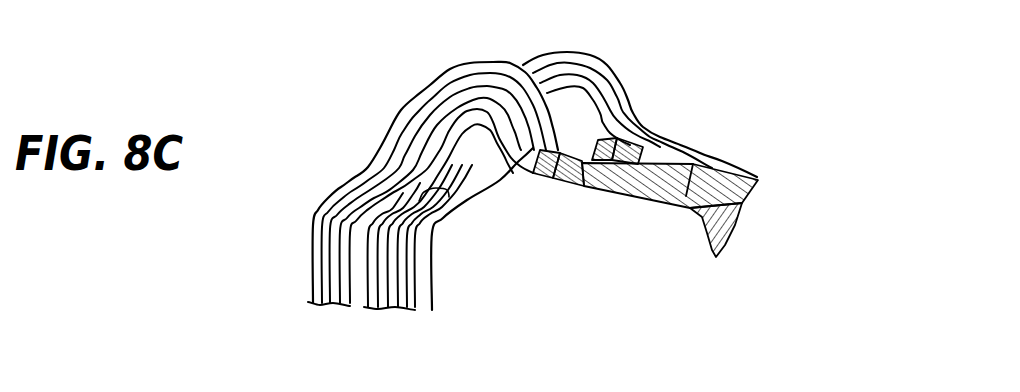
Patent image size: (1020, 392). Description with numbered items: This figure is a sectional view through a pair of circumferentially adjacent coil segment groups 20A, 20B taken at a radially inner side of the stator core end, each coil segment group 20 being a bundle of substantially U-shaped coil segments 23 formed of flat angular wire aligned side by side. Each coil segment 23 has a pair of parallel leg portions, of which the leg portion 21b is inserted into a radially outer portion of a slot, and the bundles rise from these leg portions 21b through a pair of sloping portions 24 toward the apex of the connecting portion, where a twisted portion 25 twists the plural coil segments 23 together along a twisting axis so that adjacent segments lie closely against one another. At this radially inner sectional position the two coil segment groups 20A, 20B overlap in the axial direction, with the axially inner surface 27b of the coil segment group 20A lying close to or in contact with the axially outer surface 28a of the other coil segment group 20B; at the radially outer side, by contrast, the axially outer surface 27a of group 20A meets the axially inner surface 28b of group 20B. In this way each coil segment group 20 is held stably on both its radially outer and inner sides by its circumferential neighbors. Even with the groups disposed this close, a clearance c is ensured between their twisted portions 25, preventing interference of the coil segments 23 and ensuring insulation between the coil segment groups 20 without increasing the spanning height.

The coil segment group 20 is at (568, 52).
The coil segment group 20A is at (420, 273).
The coil segment group 20B is at (353, 279).
The leg portion 21b is at (420, 299).
The coil segment 23 is at (433, 127).
The sloping portion 24 is at (488, 177).
The twisted portion 25 is at (547, 122).
The axially outer surface 27a is at (446, 198).
The axially inner surface 27b is at (688, 192).
The axially outer surface 28a is at (633, 195).
The axially inner surface 28b is at (417, 200).
The clearance c is at (584, 187).